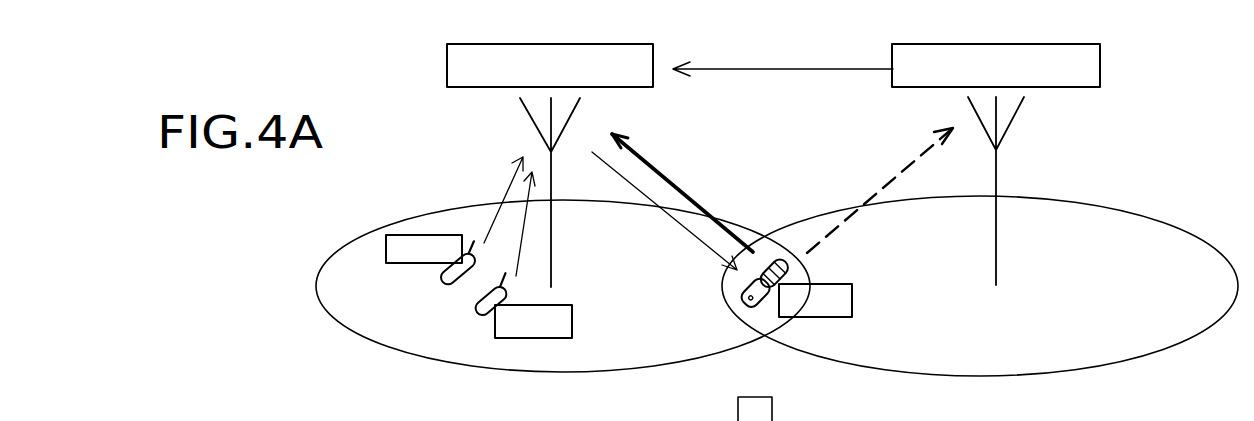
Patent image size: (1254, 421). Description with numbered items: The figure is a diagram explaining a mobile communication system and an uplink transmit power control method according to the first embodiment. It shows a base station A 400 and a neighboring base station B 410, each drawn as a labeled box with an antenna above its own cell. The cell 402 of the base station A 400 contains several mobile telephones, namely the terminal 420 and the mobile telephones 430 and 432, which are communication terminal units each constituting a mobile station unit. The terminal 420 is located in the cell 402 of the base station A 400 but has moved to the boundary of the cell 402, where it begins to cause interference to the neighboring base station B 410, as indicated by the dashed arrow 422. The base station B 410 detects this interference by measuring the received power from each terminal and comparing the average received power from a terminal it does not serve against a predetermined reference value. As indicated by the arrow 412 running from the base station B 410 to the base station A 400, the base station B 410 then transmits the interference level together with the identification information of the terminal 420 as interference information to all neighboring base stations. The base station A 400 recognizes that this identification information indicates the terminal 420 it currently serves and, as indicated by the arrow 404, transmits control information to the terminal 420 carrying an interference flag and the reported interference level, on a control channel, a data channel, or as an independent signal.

The base station A 400 is at (655, 57).
The base station B 410 is at (1100, 72).
The arrow 412 is at (803, 66).
The cell 402 is at (392, 223).
The arrow 404 is at (678, 225).
The terminal 420 is at (767, 318).
The arrow 422 is at (890, 185).
The mobile telephone 430 is at (447, 285).
The mobile telephone 432 is at (478, 313).